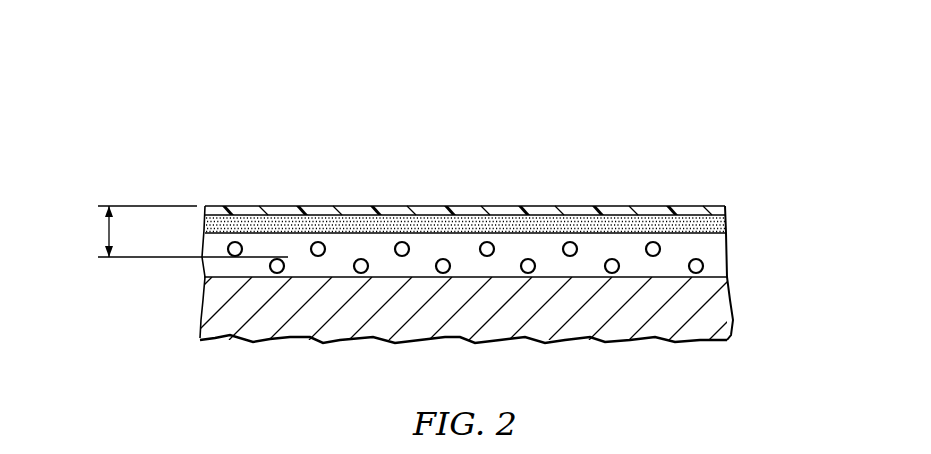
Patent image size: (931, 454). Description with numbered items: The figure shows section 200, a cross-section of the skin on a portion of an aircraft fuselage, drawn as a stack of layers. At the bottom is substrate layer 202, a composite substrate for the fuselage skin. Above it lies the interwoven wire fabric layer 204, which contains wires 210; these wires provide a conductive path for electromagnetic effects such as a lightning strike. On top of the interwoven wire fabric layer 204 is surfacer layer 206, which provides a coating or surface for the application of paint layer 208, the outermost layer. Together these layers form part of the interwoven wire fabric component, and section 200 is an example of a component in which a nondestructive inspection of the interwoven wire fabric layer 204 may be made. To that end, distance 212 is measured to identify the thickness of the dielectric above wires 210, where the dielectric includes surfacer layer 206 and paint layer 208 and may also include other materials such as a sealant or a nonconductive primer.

The section 200 is at (664, 100).
The substrate layer 202 is at (199, 318).
The interwoven wire fabric layer 204 is at (729, 272).
The surfacer layer 206 is at (727, 222).
The paint layer 208 is at (244, 207).
The wires 210 is at (426, 275).
The distance 212 is at (106, 231).